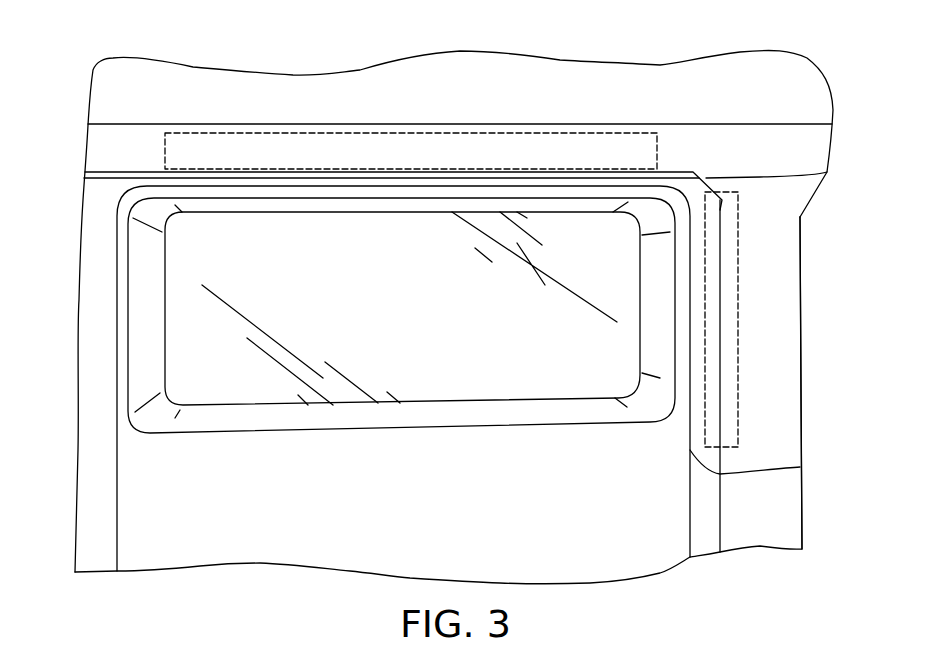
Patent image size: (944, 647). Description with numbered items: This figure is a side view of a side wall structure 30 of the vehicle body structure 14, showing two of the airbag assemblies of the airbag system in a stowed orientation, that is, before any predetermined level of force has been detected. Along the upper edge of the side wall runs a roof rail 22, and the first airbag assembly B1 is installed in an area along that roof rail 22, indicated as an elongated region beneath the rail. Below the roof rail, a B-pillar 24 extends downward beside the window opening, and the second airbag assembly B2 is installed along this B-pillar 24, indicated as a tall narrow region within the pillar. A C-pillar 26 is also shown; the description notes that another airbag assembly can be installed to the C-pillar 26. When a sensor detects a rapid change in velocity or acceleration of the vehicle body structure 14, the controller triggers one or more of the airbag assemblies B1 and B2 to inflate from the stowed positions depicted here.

The vehicle body structure 14 is at (333, 70).
The roof rail 22 is at (679, 143).
The B-pillar 24 is at (765, 377).
The C-pillar 26 is at (100, 311).
The side wall structure 30 is at (298, 517).
The airbag assembly B1 is at (238, 153).
The airbag assembly B2 is at (727, 260).